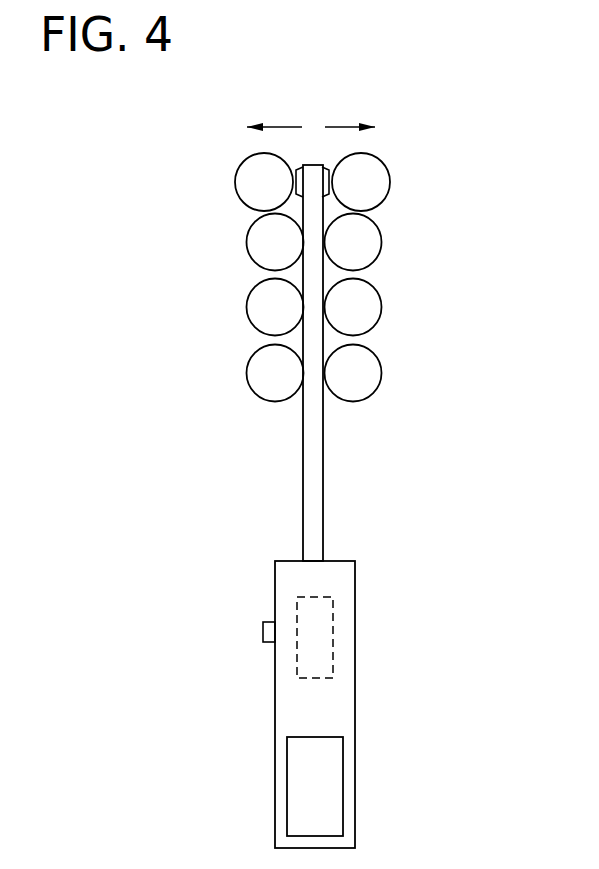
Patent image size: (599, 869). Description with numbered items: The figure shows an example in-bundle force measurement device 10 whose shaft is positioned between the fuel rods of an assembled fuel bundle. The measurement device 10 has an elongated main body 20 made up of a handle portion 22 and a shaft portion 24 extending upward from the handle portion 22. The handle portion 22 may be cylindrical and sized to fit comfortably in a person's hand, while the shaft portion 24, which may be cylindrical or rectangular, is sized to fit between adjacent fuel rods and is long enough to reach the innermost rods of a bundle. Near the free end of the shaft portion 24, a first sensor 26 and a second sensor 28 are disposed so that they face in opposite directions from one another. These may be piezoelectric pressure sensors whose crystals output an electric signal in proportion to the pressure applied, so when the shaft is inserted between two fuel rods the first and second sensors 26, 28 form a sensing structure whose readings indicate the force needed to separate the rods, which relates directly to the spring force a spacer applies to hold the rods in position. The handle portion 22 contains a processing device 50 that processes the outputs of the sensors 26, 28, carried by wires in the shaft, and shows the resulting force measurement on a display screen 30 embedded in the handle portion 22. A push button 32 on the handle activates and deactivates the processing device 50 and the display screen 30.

The measurement device 10 is at (420, 498).
The main body 20 is at (357, 363).
The handle portion 22 is at (343, 708).
The shaft portion 24 is at (317, 487).
The first sensor 26 is at (329, 166).
The second sensor 28 is at (300, 166).
The display screen 30 is at (343, 783).
The push button 32 is at (257, 642).
The processing device 50 is at (275, 597).